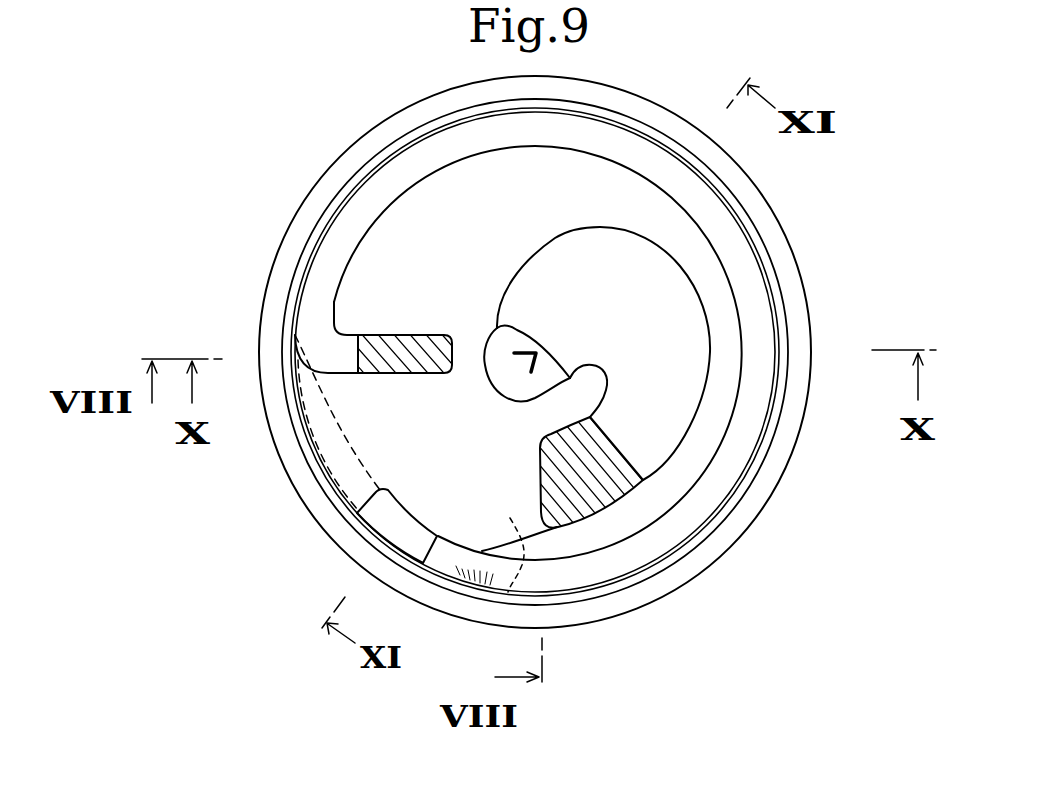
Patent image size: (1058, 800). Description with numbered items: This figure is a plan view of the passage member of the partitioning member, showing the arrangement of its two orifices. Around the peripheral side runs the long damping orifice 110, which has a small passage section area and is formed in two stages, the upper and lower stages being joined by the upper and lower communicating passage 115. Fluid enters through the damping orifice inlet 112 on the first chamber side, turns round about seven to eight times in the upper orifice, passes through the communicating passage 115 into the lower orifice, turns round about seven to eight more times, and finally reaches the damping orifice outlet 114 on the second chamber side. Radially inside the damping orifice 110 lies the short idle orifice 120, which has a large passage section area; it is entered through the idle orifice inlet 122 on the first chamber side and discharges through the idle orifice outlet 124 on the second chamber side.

The damping orifice 110 is at (327, 255).
The damping orifice inlet 112 is at (392, 364).
The damping orifice outlet 114 is at (499, 539).
The upper and lower communicating passage 115 is at (385, 523).
The idle orifice 120 is at (653, 352).
The idle orifice inlet 122 is at (593, 480).
The idle orifice outlet 124 is at (508, 343).